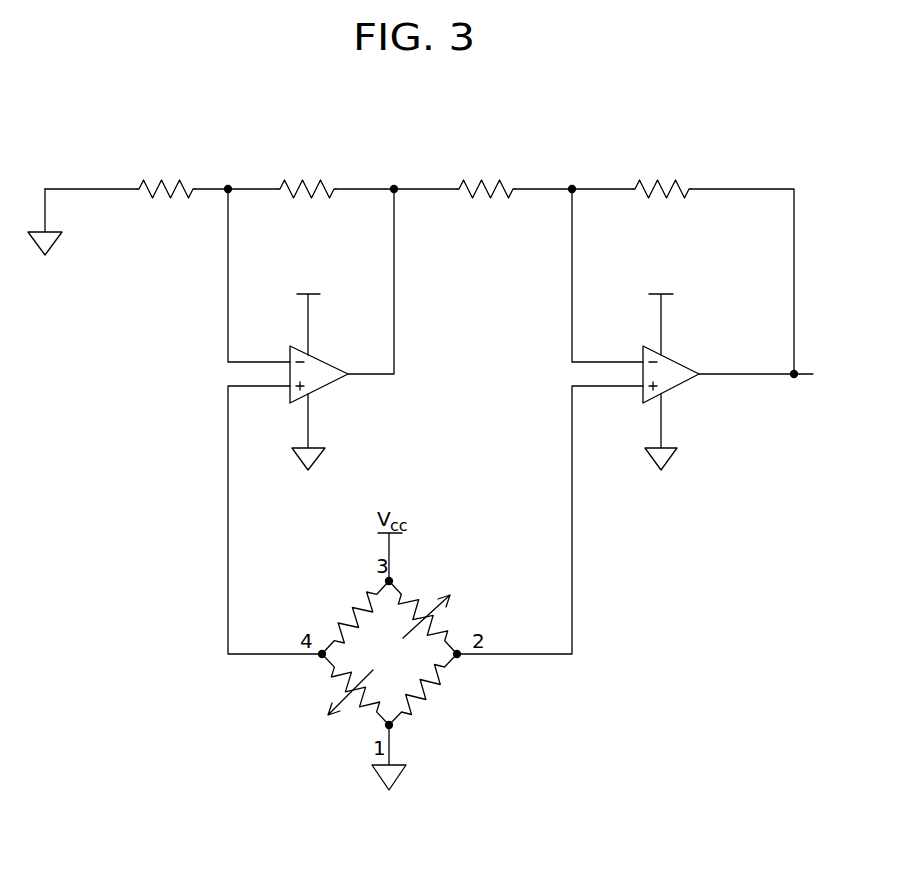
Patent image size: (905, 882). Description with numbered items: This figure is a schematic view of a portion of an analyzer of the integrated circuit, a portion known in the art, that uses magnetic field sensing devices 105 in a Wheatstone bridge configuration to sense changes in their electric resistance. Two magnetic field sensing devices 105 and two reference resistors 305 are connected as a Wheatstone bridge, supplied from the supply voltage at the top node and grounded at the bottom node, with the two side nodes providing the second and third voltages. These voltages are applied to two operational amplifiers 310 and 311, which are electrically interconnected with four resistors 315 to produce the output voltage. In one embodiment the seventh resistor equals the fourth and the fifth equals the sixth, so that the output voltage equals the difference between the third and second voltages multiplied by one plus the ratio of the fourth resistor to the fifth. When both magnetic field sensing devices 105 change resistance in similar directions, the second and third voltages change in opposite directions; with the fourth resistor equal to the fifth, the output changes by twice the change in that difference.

The resistors 315 is at (384, 150).
The operational amplifier 310 is at (320, 357).
The operational amplifier 311 is at (675, 357).
The reference resistors 305 is at (394, 666).
The magnetic field sensing devices 105 is at (385, 658).